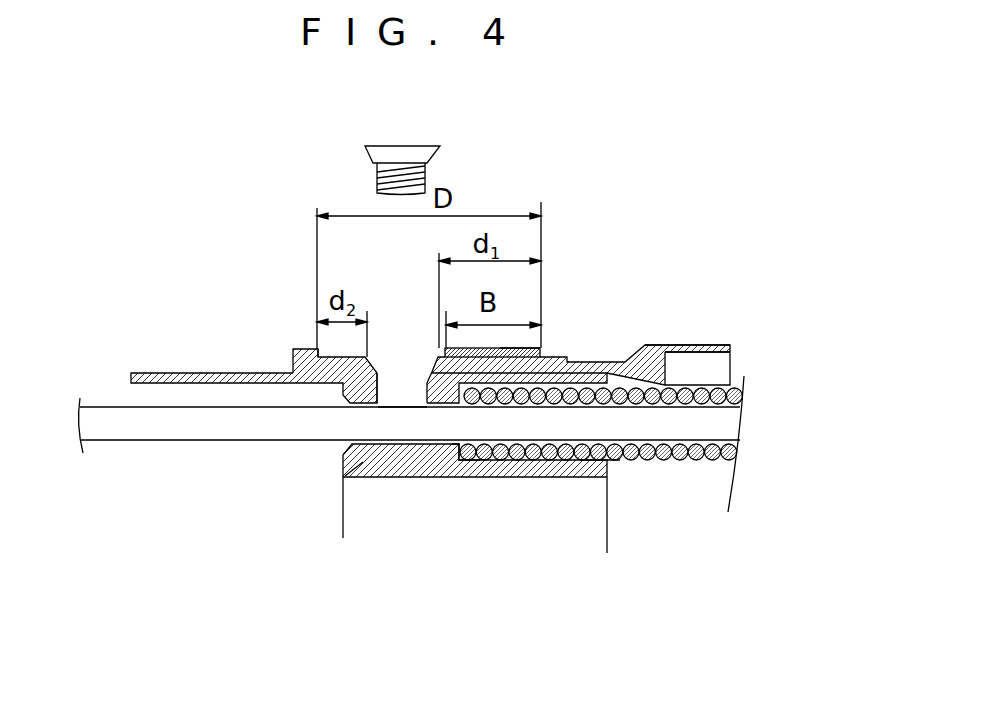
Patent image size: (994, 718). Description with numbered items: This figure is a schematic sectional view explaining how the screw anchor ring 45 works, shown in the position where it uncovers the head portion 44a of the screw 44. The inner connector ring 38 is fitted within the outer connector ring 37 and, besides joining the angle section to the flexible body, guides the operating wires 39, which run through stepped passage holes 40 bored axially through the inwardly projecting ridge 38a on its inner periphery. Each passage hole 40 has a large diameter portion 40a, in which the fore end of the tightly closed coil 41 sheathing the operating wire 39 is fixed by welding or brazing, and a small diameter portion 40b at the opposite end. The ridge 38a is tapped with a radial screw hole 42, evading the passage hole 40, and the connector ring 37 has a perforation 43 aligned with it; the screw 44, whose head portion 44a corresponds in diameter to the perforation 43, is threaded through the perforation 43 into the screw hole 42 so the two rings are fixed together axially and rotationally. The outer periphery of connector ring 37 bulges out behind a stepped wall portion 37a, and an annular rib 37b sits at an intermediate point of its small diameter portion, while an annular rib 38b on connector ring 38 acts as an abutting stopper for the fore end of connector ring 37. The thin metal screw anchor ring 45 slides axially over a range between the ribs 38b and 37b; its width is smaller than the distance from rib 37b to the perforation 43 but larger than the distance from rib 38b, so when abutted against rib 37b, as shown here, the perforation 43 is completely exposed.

The connector ring 37 is at (706, 333).
The stepped wall portion 37a is at (636, 352).
The annular rib 37b is at (558, 349).
The connector ring 38 is at (172, 360).
The inwardly projecting ridge 38a is at (343, 478).
The annular rib 38b is at (298, 350).
The operating wire 39 is at (133, 428).
The passage hole 40 is at (363, 440).
The large diameter portion 40a is at (590, 443).
The small diameter portion 40b is at (452, 444).
The tightly closed coil 41 is at (746, 372).
The screw hole 42 is at (378, 388).
The perforation 43 is at (413, 362).
The screw 44 is at (375, 177).
The head portion 44a is at (440, 149).
The screw anchor ring 45 is at (508, 349).